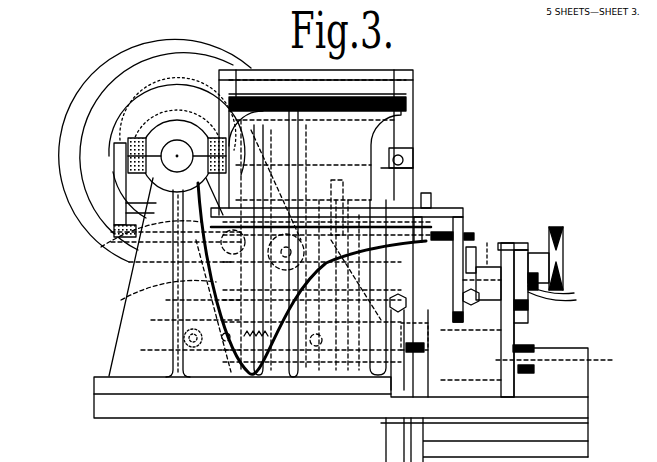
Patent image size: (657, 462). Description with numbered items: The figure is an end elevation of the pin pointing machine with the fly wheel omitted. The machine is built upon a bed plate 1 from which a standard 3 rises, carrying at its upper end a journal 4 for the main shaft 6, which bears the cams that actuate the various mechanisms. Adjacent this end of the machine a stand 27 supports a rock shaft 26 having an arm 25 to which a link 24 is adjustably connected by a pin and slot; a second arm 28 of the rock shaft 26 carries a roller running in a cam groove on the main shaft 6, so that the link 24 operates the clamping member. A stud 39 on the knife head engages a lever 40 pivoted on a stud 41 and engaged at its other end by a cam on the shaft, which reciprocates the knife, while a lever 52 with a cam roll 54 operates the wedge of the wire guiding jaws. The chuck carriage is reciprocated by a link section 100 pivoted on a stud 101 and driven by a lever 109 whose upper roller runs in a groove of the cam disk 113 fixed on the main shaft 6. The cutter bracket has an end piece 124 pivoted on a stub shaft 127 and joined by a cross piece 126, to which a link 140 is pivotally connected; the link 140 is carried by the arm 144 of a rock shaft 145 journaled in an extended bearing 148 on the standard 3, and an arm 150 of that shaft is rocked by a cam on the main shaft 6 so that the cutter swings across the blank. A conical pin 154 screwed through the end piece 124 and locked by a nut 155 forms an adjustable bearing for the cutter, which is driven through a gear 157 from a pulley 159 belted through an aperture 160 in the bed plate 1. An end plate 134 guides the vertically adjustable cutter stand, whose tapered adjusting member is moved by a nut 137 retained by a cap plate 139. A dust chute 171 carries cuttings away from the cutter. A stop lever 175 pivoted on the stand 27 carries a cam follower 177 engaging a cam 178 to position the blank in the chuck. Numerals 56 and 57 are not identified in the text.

The bed plate 1 is at (582, 405).
The standard 3 is at (127, 325).
The journal 4 is at (157, 137).
The main shaft 6 is at (176, 152).
The link 24 is at (431, 196).
The arm 25 is at (410, 112).
The rock shaft 26 is at (412, 80).
The stand 27 is at (342, 118).
The arm 28 is at (211, 102).
The stud 39 is at (414, 152).
The lever 40 is at (414, 120).
The stud 41 is at (296, 144).
The lever 52 is at (168, 287).
The cam roll 54 is at (167, 247).
The lower base 56 is at (573, 381).
The end plate 57 is at (588, 360).
The link section 100 is at (299, 263).
The stud 101 is at (316, 392).
The lever 109 is at (175, 301).
The cam disk 113 is at (66, 123).
The end piece 124 is at (530, 298).
The cross piece 126 is at (497, 256).
The stub shaft 127 is at (543, 333).
The end plate 134 is at (512, 388).
The nut 137 is at (580, 357).
The cap plate 139 is at (528, 356).
The link 140 is at (472, 252).
The arm 144 is at (462, 239).
The rock shaft 145 is at (465, 221).
The bearing 148 is at (430, 211).
The arm 150 is at (117, 184).
The conical pin 154 is at (564, 251).
The nut 155 is at (533, 297).
The gear 157 is at (490, 256).
The pulley 159 is at (565, 244).
The aperture 160 is at (393, 386).
The dust chute 171 is at (486, 315).
The lever 175 is at (385, 262).
The cam follower 177 is at (112, 253).
The cam 178 is at (77, 143).